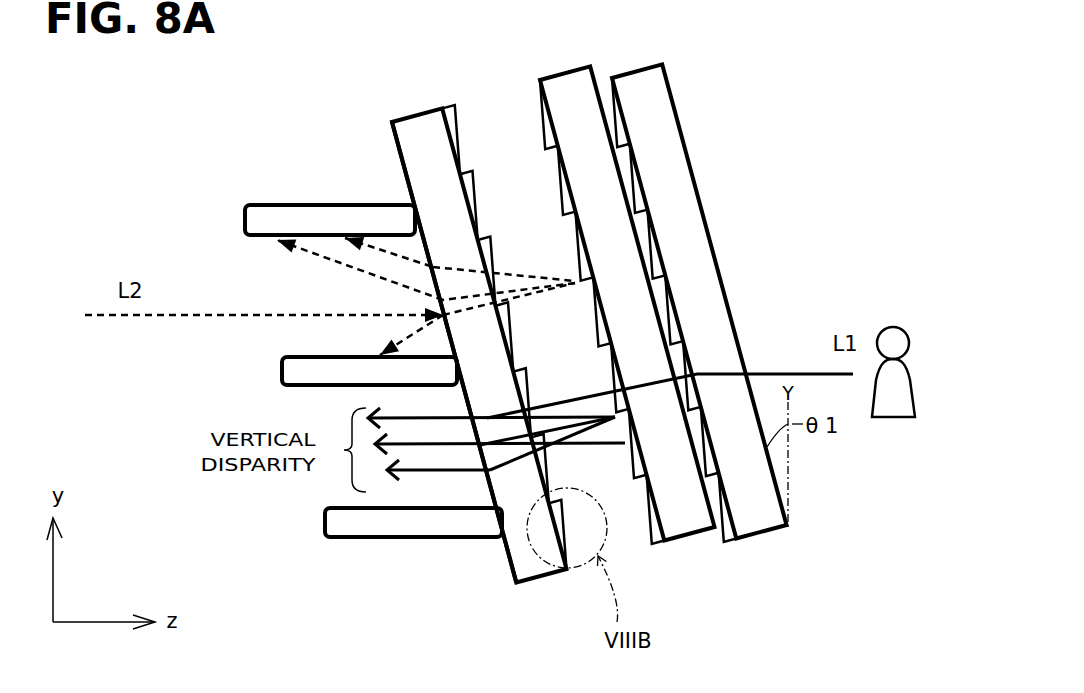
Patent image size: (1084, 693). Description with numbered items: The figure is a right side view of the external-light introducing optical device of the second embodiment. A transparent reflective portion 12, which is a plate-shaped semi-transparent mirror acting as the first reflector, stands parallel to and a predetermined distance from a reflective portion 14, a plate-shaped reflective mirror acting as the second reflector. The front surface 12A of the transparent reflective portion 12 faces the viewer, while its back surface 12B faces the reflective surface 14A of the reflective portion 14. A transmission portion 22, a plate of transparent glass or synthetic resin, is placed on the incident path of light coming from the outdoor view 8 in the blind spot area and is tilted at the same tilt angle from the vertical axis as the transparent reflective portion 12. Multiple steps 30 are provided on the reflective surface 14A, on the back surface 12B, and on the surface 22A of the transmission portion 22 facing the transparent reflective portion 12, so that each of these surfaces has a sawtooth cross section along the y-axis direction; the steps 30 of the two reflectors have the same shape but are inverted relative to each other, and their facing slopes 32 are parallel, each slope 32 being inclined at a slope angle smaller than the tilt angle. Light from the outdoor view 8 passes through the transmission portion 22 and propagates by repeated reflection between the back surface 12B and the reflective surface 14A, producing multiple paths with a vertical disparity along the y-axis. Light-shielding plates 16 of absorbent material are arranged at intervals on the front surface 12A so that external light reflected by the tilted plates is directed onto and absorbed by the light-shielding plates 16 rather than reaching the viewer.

The transparent reflective portion 12 is at (530, 578).
The front surface 12A is at (386, 140).
The back surface 12B is at (463, 128).
The reflective portion 14 is at (683, 522).
The reflective surface 14A is at (528, 115).
The transmission portion 22 is at (755, 512).
The surface of the transmission portion 22A is at (607, 93).
The steps 30 is at (733, 547).
The slopes 32 is at (633, 190).
The light-shielding plates 16 is at (408, 518).
The outdoor view 8 is at (905, 392).